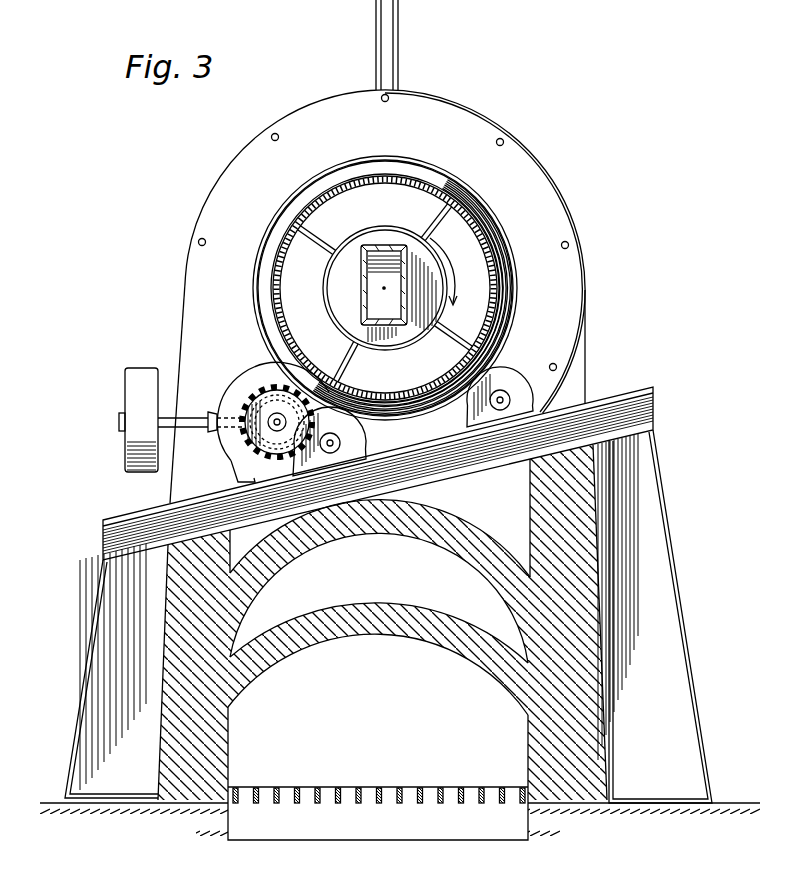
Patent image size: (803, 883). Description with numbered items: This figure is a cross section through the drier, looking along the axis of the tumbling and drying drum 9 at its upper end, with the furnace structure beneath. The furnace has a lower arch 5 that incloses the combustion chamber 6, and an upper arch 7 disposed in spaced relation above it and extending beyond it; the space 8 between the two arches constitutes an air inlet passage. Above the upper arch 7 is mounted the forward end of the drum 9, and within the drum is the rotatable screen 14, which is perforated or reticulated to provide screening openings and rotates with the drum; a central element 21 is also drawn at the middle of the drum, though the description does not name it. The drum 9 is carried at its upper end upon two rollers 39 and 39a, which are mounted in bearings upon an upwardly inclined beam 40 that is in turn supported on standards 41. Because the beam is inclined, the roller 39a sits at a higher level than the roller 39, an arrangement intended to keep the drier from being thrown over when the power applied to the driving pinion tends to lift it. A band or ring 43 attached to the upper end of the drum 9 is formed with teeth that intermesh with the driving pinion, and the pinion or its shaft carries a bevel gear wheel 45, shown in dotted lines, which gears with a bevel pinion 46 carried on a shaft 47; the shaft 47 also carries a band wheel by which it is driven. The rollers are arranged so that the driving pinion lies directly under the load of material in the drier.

The arch 5 is at (433, 595).
The combustion chamber 6 is at (378, 773).
The upper arch 7 is at (457, 538).
The space 8 is at (379, 598).
The tumbling and drying drum 9 is at (490, 232).
The screen 14 is at (395, 347).
The central block 21 is at (387, 246).
The roller 39 is at (366, 437).
The roller 39a is at (528, 404).
The upwardly inclined beam 40 is at (634, 410).
The standards 41 is at (655, 616).
The toothed band or ring 43 is at (503, 328).
The bevel gear wheel 45 is at (262, 382).
The bevel pinion 46 is at (245, 440).
The shaft 47 is at (200, 409).